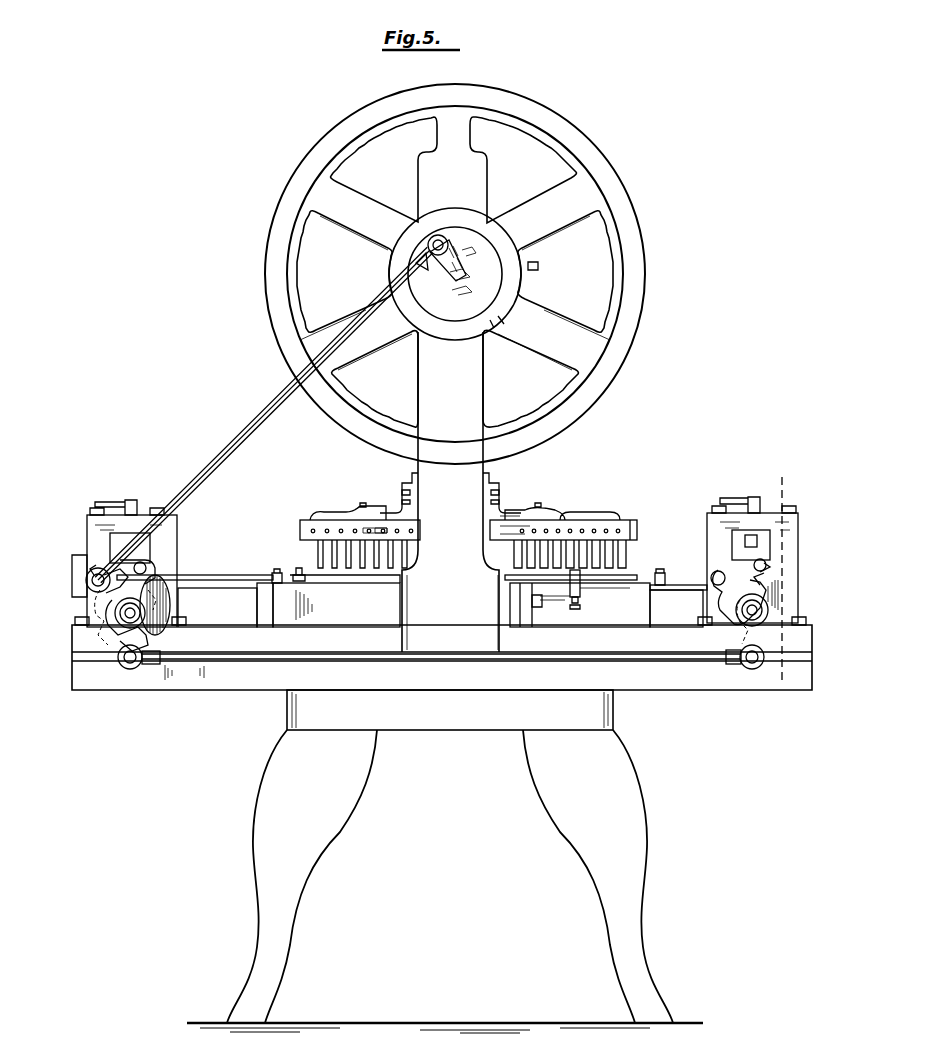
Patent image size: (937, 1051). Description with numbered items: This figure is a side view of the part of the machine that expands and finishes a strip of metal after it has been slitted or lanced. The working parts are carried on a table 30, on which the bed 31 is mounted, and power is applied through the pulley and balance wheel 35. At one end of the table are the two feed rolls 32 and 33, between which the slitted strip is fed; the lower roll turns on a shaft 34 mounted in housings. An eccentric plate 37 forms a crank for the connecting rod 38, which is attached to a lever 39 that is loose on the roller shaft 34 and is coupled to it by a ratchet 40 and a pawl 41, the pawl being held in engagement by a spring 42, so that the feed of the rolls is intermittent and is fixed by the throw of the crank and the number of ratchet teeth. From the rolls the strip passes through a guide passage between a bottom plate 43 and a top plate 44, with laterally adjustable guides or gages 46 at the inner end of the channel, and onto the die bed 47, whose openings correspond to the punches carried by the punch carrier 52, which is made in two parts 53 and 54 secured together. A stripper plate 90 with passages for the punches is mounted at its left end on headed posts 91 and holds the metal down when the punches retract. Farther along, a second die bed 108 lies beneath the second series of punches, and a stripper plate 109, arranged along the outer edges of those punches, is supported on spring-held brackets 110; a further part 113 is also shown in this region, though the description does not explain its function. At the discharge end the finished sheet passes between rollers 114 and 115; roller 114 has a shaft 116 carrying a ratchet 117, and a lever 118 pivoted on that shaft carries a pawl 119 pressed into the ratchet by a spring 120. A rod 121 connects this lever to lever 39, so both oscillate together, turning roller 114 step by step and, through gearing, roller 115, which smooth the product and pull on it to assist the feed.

The table 30 is at (300, 713).
The bed 31 is at (82, 678).
The feed roll 32 is at (100, 543).
The feed roll 33 is at (95, 612).
The shaft of the lower roll 34 is at (128, 669).
The pulley and balance wheel 35 is at (640, 255).
The eccentric plate 37 is at (478, 238).
The connecting rod 38 is at (268, 408).
The lever 39 is at (104, 592).
The ratchet 40 is at (105, 630).
The pawl 41 is at (150, 577).
The spring 42 is at (160, 585).
The bottom plate of the guide passage 43 is at (223, 588).
The top plate of the guide passage 44 is at (226, 575).
The guide or gage 46 is at (277, 568).
The die bed 47 is at (336, 601).
The punch carrier 52 is at (540, 515).
The part of the punch carrier 53 is at (318, 526).
The part of the punch carrier 54 is at (632, 527).
The stripper plate 90 is at (404, 586).
The headed post 91 is at (299, 568).
The die bed 108 is at (580, 598).
The stripper plate 109 is at (642, 572).
The bracket 110 is at (655, 590).
The rail 113 is at (678, 585).
The roller 114 is at (782, 690).
The roller 115 is at (783, 569).
The shaft 116 is at (752, 672).
The ratchet 117 is at (738, 648).
The lever 118 is at (753, 670).
The pawl 119 is at (762, 572).
The spring 120 is at (768, 577).
The rod 121 is at (627, 660).